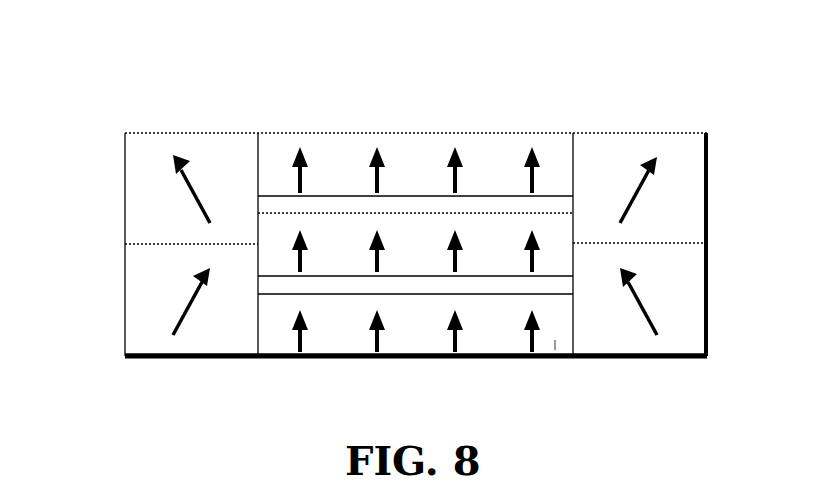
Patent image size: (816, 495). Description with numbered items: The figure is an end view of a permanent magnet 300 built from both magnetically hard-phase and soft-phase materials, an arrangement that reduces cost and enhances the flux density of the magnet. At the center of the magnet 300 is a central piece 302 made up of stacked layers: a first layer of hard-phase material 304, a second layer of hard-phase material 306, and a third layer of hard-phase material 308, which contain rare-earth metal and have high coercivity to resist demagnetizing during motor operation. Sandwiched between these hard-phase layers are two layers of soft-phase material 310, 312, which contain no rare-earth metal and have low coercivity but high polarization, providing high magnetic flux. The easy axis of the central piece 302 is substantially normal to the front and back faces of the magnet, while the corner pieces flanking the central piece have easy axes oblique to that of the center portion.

The permanent magnet 300 is at (221, 81).
The central piece 302 is at (535, 384).
The first layer of hard-phase material 304 is at (417, 143).
The second layer of hard-phase material 306 is at (557, 232).
The third layer of hard-phase material 308 is at (555, 347).
The layer of soft-phase material 310 is at (555, 192).
The layer of soft-phase material 312 is at (277, 295).